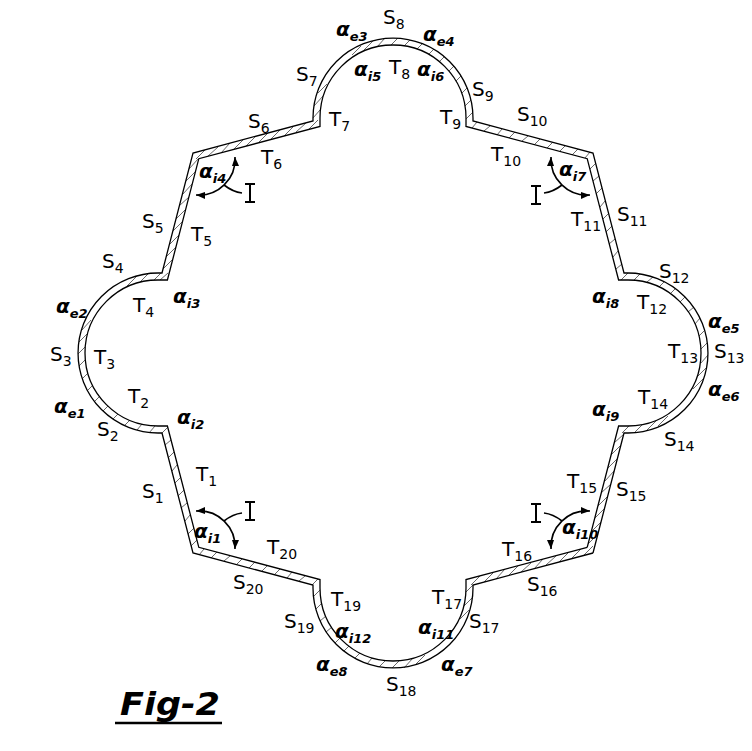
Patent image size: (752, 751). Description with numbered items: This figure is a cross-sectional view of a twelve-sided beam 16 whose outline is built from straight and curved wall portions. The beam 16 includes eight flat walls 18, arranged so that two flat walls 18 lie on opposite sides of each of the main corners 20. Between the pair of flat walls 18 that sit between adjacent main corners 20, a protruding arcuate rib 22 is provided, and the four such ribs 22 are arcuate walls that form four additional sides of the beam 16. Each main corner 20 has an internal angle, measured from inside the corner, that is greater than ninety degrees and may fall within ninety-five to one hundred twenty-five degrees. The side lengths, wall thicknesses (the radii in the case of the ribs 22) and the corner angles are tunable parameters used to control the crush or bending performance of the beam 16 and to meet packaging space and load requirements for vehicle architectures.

The beam 16 is at (654, 112).
The flat wall 18 is at (241, 139).
The main corner 20 is at (192, 556).
The protruding arcuate rib 22 is at (439, 56).